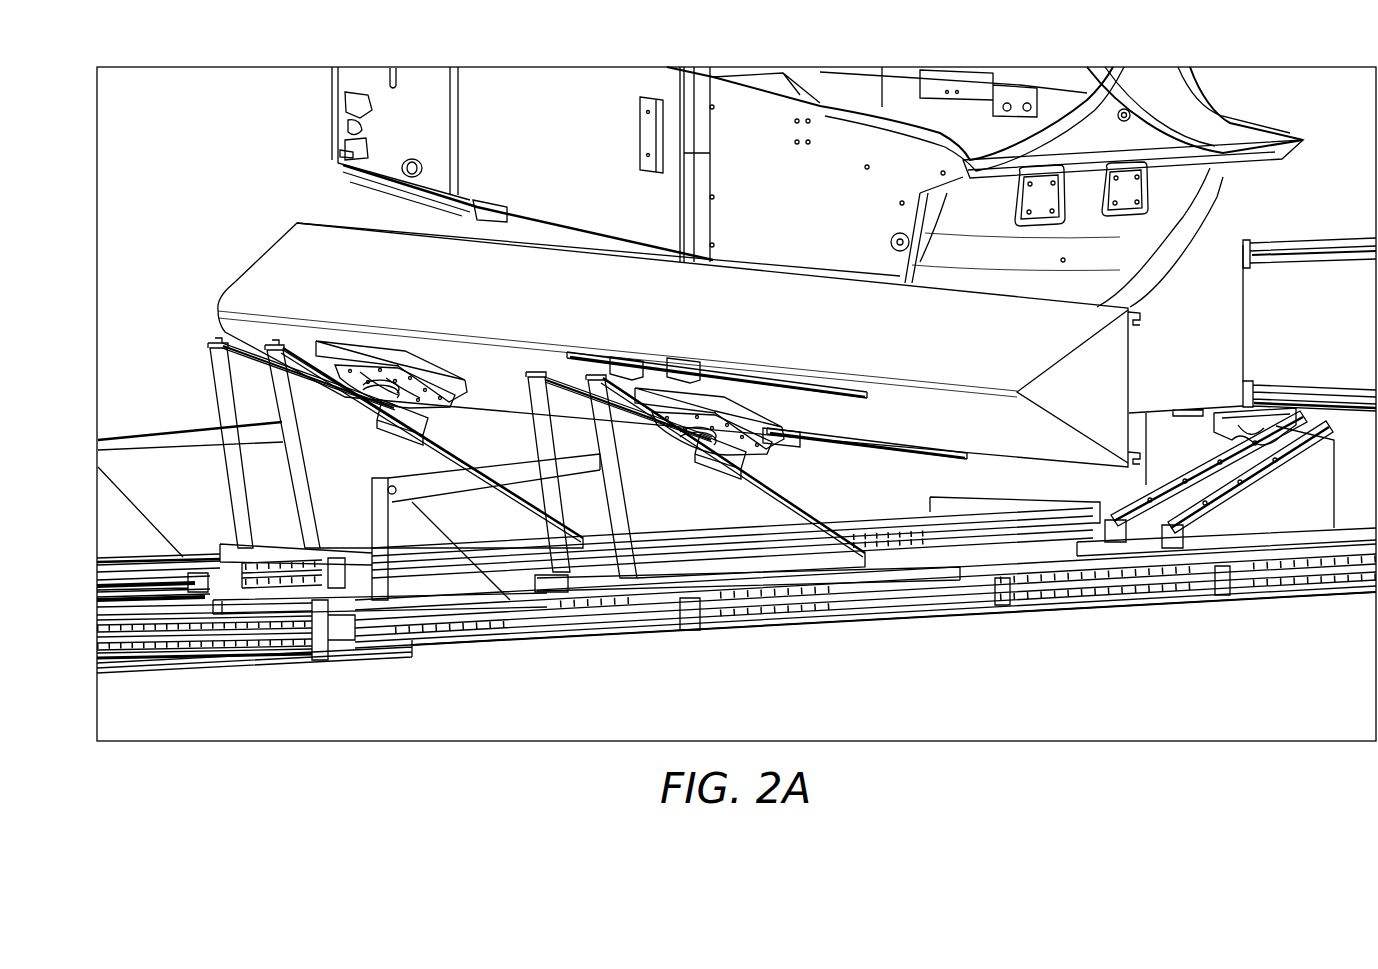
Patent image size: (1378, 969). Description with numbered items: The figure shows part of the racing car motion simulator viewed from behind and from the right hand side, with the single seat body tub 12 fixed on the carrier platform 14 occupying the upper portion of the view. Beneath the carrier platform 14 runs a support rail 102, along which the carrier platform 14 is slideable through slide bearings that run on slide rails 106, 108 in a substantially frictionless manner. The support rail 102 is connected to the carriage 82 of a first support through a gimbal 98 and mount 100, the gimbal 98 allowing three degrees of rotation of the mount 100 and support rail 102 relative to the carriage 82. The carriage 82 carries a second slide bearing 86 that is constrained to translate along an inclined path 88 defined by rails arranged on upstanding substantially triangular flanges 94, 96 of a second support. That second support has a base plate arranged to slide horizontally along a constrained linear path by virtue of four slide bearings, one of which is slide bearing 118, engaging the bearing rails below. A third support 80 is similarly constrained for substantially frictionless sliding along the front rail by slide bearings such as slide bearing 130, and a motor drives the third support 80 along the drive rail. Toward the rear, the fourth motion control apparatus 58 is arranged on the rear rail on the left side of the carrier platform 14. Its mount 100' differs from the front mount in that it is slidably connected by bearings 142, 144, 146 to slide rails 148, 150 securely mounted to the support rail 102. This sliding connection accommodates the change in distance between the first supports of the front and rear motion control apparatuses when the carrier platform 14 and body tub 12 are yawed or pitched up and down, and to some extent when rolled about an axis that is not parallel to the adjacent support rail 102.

The body tub 12 is at (1157, 110).
The carrier platform 14 is at (513, 232).
The fourth motion control apparatus 58 is at (505, 656).
The third support 80 is at (147, 533).
The carriage 82 is at (1232, 413).
The second slide bearing 86 is at (397, 420).
The inclined path 88 is at (801, 510).
The triangular flange 94 is at (218, 374).
The triangular flange 96 is at (302, 483).
The gimbal 98 is at (367, 387).
The mount 100 is at (421, 353).
The mount 100' is at (730, 394).
The support rail 102 is at (277, 260).
The slide rail 106 is at (1327, 398).
The slide rail 108 is at (1313, 253).
The slide bearing 118 is at (552, 572).
The slide bearing 130 is at (218, 592).
The bearing 142 is at (620, 365).
The bearing 144 is at (678, 365).
The bearing 146 is at (777, 483).
The slide rail 148 is at (904, 446).
The slide rail 150 is at (851, 380).